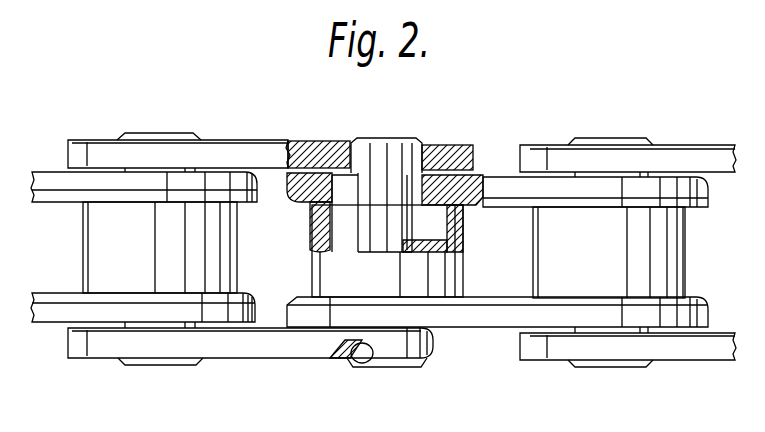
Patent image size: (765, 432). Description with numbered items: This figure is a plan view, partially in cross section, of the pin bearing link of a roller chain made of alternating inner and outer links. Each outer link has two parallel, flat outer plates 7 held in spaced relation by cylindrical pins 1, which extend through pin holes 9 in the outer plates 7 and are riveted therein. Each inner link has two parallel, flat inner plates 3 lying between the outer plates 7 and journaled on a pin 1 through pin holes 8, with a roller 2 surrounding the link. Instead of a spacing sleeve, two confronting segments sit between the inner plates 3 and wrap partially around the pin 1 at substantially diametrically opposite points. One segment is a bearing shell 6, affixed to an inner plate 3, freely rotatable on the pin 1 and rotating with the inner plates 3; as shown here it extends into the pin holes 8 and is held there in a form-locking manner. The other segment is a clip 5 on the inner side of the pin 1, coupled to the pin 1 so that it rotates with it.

The pin 1 is at (370, 157).
The roller 2 is at (453, 278).
The inner plate 3 is at (493, 180).
The clip 5 is at (440, 190).
The bearing shell 6 is at (340, 198).
The outer plate 7 is at (265, 153).
The pin hole of inner plate 8 is at (425, 191).
The pin hole of outer plate 9 is at (368, 363).